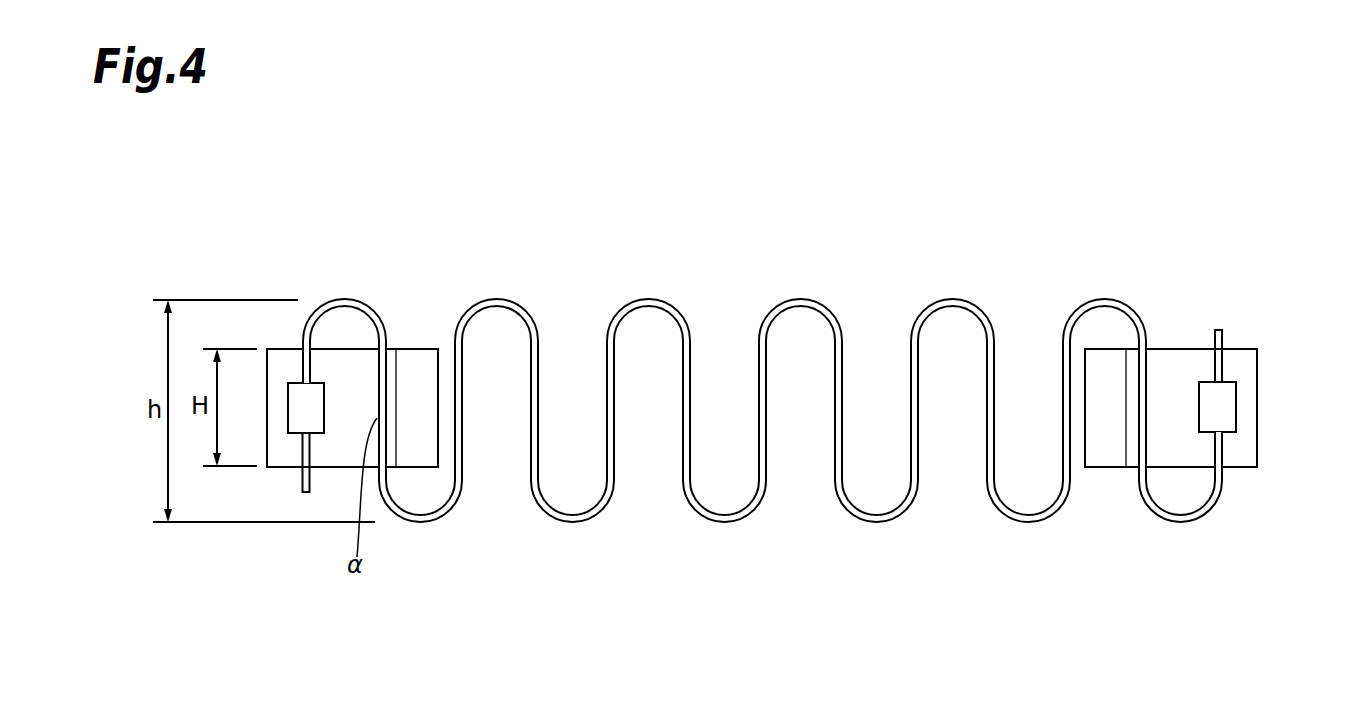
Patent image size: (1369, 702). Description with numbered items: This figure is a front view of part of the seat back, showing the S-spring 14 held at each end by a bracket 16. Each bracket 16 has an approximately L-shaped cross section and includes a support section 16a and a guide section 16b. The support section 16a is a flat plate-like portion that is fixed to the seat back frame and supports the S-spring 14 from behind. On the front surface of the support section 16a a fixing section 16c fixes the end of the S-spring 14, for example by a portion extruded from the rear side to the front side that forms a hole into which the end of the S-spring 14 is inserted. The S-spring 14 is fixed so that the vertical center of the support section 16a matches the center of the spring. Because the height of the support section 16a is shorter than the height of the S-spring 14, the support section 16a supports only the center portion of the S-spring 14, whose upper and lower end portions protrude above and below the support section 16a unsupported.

The S-spring 14 is at (498, 298).
The bracket 16 is at (393, 340).
The support section 16a is at (328, 455).
The guide section 16b is at (419, 363).
The fixing section 16c is at (294, 423).